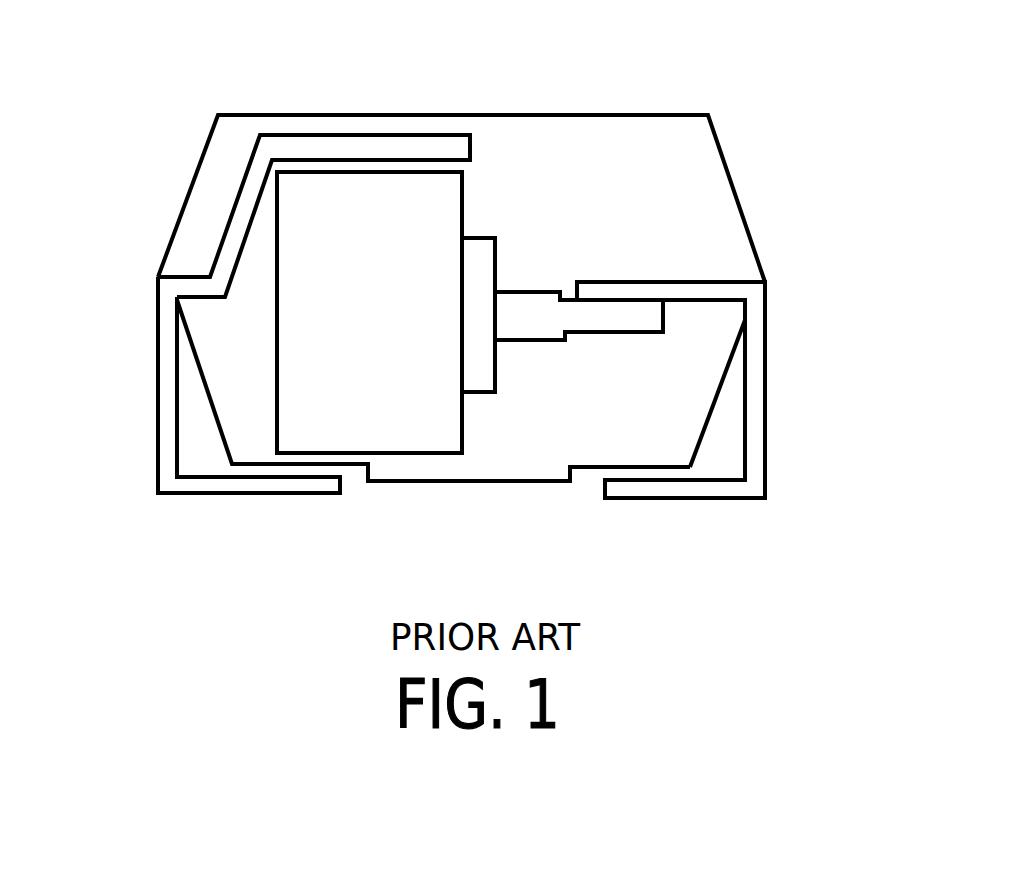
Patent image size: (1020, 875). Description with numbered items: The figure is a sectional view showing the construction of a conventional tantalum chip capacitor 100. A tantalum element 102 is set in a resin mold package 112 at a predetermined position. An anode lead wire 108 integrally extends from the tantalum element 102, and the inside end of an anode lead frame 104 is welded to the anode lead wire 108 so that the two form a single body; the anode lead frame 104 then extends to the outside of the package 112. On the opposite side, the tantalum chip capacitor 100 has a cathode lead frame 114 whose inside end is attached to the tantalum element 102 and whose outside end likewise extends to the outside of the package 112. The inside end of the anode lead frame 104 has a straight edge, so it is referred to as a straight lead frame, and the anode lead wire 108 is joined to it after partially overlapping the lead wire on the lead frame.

The tantalum chip capacitor 100 is at (313, 57).
The tantalum element 102 is at (297, 247).
The anode lead frame 104 is at (753, 345).
The anode lead wire 108 is at (560, 318).
The resin mold package 112 is at (712, 197).
The cathode lead frame 114 is at (167, 387).